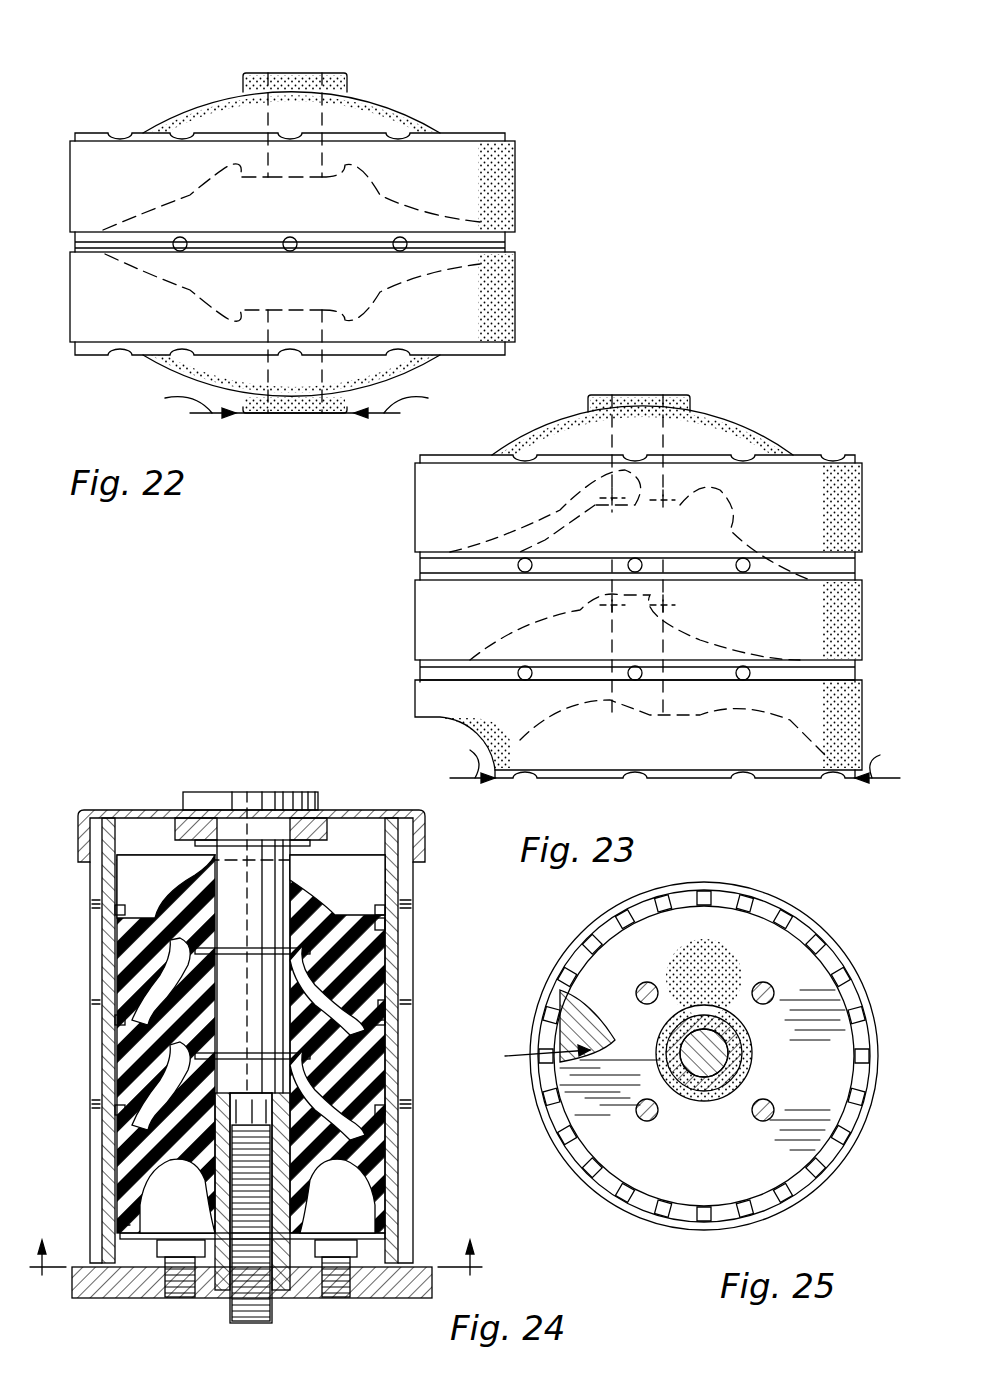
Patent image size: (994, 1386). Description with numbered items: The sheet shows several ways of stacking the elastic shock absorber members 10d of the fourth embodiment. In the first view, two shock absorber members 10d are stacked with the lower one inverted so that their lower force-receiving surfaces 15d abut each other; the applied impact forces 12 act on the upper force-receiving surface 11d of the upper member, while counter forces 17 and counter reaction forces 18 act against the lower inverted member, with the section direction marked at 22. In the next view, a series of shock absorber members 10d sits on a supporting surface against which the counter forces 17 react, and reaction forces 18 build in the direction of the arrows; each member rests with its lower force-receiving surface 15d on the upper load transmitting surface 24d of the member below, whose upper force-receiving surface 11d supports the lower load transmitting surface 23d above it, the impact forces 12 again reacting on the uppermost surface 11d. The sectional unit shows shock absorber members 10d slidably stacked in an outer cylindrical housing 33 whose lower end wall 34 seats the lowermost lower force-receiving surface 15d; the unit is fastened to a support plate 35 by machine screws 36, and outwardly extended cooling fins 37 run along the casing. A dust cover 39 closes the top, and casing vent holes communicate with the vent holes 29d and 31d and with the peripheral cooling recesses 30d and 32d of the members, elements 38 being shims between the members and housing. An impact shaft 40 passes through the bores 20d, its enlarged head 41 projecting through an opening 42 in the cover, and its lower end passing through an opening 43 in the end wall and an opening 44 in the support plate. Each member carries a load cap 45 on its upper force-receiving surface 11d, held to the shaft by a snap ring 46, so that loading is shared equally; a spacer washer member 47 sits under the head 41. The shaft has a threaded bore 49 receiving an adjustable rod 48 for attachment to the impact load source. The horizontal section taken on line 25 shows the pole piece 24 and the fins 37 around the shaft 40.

In FIG. 22, the shock absorber member 10d is at (517, 182).
In FIG. 23, the shock absorber member 10d is at (415, 506).
In FIG. 24, the shock absorber member 10d is at (128, 947).
In FIG. 25, the shock absorber member 10d is at (537, 1053).
In FIG. 22, the upper force-receiving surface 11d is at (340, 73).
In FIG. 23, the upper force-receiving surface 11d is at (680, 395).
In FIG. 23, the applied impact forces 12 is at (635, 393).
In FIG. 24, the applied impact forces 12 is at (257, 1325).
In FIG. 22, the lower force-receiving surface 15d is at (510, 238).
In FIG. 23, the lower force-receiving surface 15d is at (420, 575).
In FIG. 24, the lower force-receiving surface 15d is at (118, 1145).
In FIG. 22, the counter forces 17 is at (292, 416).
In FIG. 23, the counter forces 17 is at (490, 782).
In FIG. 22, the counter reaction forces 18 is at (288, 396).
In FIG. 23, the counter reaction forces 18 is at (670, 754).
In FIG. 24, the bore 20d is at (214, 885).
In FIG. 22, the view arrow 22 is at (298, 72).
In FIG. 23, the lower load transmitting surface 23d is at (640, 608).
In FIG. 24, the lower load transmitting surface 23d is at (200, 968).
In FIG. 25, the pole piece 24 is at (595, 1010).
In FIG. 23, the upper load transmitting surface 24d is at (440, 555).
In FIG. 24, the upper load transmitting surface 24d is at (122, 1105).
In FIG. 24, the section line 25 is at (255, 1242).
In FIG. 22, the vent holes 29d is at (425, 128).
In FIG. 23, the vent holes 29d is at (760, 450).
In FIG. 24, the vent holes 29d is at (122, 998).
In FIG. 24, the peripheral cooling recess 30d is at (388, 1002).
In FIG. 24, the vent holes 31d is at (118, 1040).
In FIG. 24, the peripheral cooling recess 32d is at (388, 922).
In FIG. 24, the outer cylindrical housing 33 is at (108, 882).
In FIG. 25, the outer cylindrical housing 33 is at (572, 972).
In FIG. 24, the lower end wall 34 is at (142, 1280).
In FIG. 25, the lower end wall 34 is at (772, 935).
In FIG. 24, the support plate 35 is at (118, 1283).
In FIG. 24, the machine screws 36 is at (182, 1272).
In FIG. 25, the machine screws 36 is at (650, 983).
In FIG. 24, the cooling fins 37 is at (405, 965).
In FIG. 25, the cooling fins 37 is at (556, 995).
In FIG. 24, the shim 38 is at (118, 910).
In FIG. 24, the dust cover 39 is at (104, 808).
In FIG. 25, the dust cover 39 is at (826, 926).
In FIG. 24, the impact shaft 40 is at (282, 1262).
In FIG. 25, the impact shaft 40 is at (725, 1048).
In FIG. 24, the enlarged head 41 is at (196, 800).
In FIG. 24, the opening 42 is at (325, 816).
In FIG. 24, the opening 43 is at (228, 1245).
In FIG. 24, the opening 44 is at (300, 1280).
In FIG. 25, the opening 44 is at (718, 1025).
In FIG. 24, the load cap 45 is at (318, 862).
In FIG. 24, the snap ring 46 is at (300, 842).
In FIG. 24, the spacer washer member 47 is at (178, 822).
In FIG. 24, the adjustable rod 48 is at (252, 1295).
In FIG. 25, the adjustable rod 48 is at (703, 1065).
In FIG. 24, the threaded bore 49 is at (230, 1226).